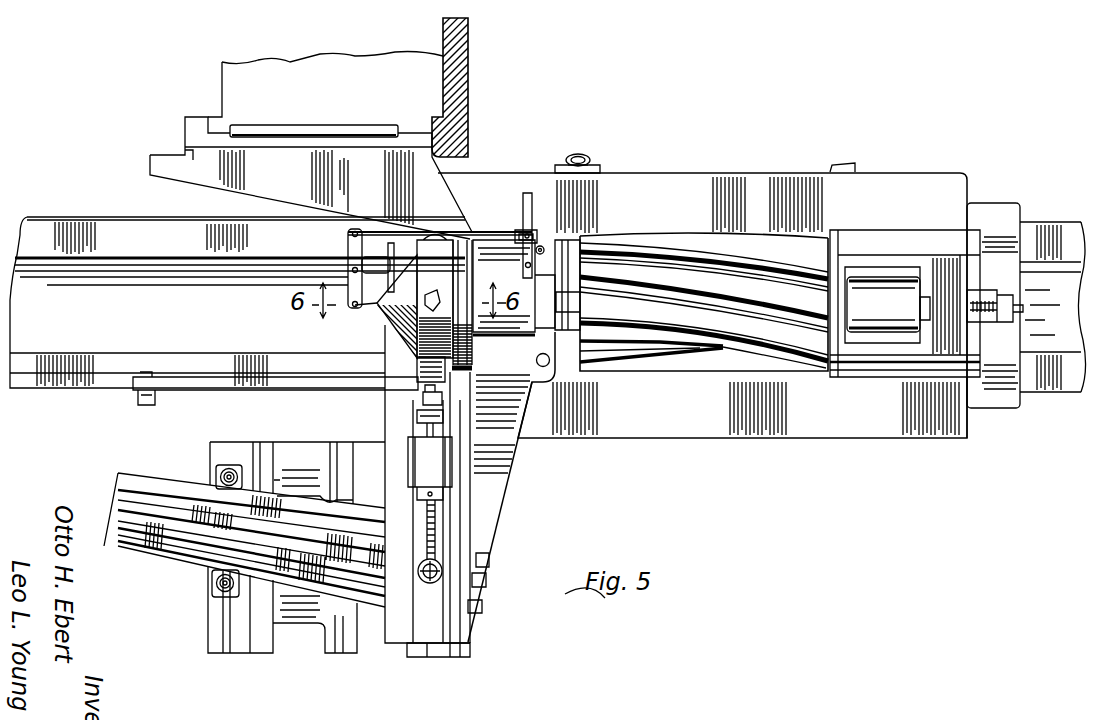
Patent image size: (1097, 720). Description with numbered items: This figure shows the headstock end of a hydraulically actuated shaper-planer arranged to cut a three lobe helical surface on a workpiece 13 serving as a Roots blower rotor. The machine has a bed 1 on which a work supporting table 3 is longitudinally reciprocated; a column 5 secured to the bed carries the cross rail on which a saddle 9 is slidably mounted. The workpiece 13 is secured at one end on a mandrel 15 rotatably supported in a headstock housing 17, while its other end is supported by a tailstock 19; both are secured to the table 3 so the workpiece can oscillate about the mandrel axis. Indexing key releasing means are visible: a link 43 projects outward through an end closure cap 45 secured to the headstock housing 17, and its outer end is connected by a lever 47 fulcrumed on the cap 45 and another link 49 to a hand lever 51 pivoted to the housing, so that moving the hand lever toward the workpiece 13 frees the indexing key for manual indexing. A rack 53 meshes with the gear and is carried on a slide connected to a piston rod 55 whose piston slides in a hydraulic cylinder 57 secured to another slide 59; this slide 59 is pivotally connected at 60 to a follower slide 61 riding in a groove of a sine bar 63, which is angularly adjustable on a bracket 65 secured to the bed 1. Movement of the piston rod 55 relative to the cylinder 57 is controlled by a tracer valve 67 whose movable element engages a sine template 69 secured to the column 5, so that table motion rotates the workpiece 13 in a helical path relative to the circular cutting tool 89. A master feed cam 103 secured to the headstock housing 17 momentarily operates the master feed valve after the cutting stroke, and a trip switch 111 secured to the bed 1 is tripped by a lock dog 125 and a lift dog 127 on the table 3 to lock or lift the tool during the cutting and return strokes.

The bed 1 is at (105, 382).
The work supporting table 3 is at (832, 420).
The column 5 is at (318, 67).
The saddle 9 is at (470, 78).
The workpiece 13 is at (703, 238).
The mandrel 15 is at (580, 300).
The headstock housing 17 is at (470, 330).
The tailstock 19 is at (885, 278).
The link 43 is at (372, 306).
The end closure cap 45 is at (395, 312).
The lever 47 is at (348, 243).
The link 49 is at (472, 236).
The hand lever 51 is at (526, 193).
The rack 53 is at (415, 396).
The piston rod 55 is at (417, 419).
The hydraulic cylinder 57 is at (408, 456).
The slide 59 is at (433, 528).
The pivotal connection 60 is at (433, 583).
The follower slide 61 is at (486, 580).
The sine bar 63 is at (175, 523).
The bracket 65 is at (247, 637).
The tracer valve 67 is at (412, 244).
The sine template 69 is at (428, 195).
The circular cutting tool 89 is at (553, 353).
The master feed cam 103 is at (430, 297).
The trip switch 111 is at (577, 152).
The lock dog 125 is at (590, 162).
The lift dog 127 is at (838, 172).